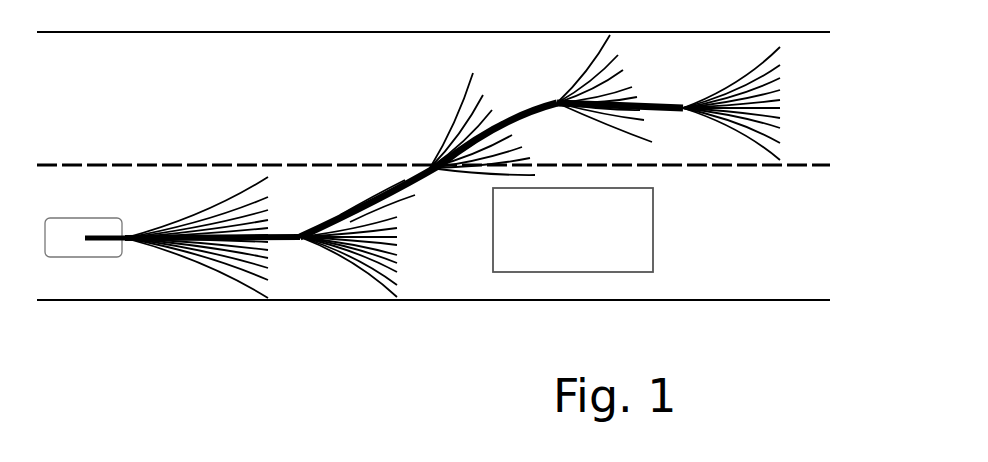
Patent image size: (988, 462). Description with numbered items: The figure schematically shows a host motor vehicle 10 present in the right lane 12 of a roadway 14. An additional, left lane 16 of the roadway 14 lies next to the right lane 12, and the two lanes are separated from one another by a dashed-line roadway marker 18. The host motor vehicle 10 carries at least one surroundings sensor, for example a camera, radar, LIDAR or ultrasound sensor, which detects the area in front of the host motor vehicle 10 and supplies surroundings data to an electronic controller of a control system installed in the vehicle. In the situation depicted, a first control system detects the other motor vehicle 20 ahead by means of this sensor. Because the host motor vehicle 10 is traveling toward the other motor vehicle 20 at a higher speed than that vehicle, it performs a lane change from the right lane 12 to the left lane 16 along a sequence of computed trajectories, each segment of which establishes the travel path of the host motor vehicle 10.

The host motor vehicle 10 is at (85, 217).
The right lane 12 is at (452, 166).
The roadway 14 is at (302, 326).
The left lane 16 is at (433, 79).
The dashed-line roadway marker 18 is at (268, 158).
The other motor vehicle 20 is at (573, 230).